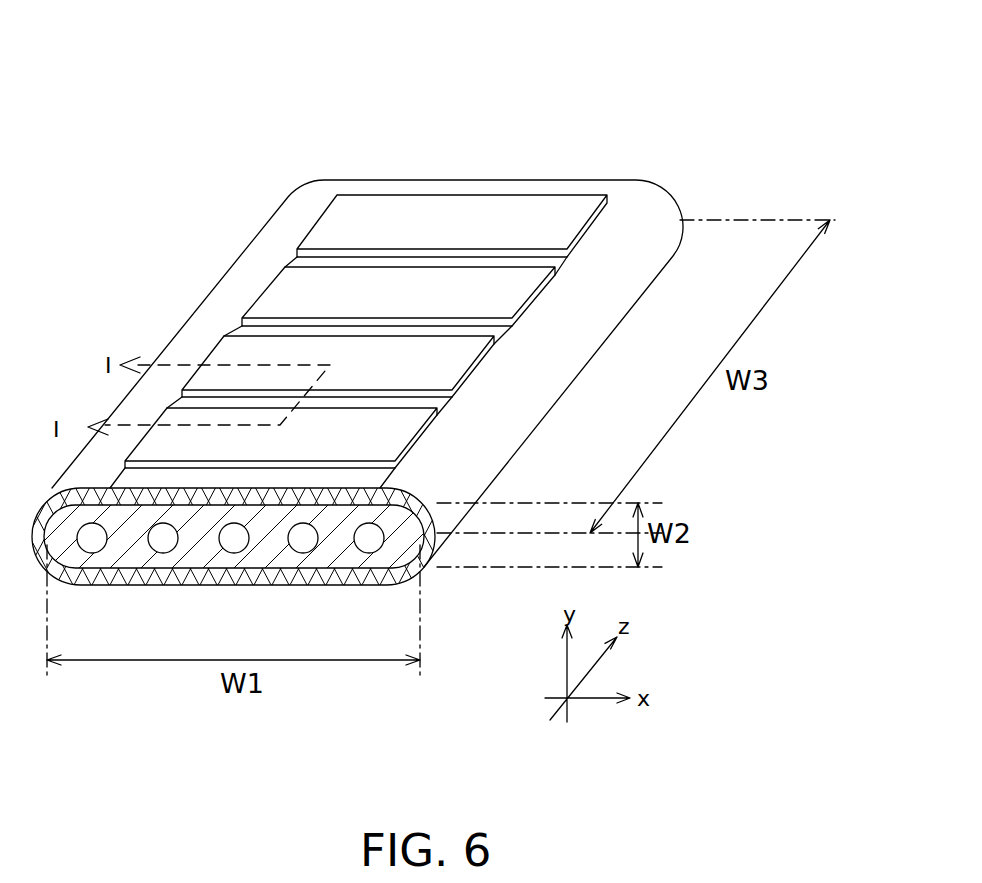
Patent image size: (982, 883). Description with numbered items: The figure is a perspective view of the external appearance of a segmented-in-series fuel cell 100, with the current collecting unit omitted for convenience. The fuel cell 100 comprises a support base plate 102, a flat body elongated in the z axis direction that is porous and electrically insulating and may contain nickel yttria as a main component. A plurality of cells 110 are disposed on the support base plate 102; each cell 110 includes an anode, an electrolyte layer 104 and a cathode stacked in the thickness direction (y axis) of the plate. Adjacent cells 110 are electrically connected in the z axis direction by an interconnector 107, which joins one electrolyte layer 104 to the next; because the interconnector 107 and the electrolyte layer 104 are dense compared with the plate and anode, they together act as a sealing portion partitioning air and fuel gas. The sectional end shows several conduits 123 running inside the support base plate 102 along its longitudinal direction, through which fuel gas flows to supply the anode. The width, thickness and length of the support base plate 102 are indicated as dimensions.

The segmented-in-series fuel cell 100 is at (352, 338).
The support base plate 102 is at (363, 560).
The electrolyte layer 104 is at (435, 528).
The interconnector 107 is at (393, 405).
The cell 110 is at (242, 442).
The conduit 123 is at (234, 545).